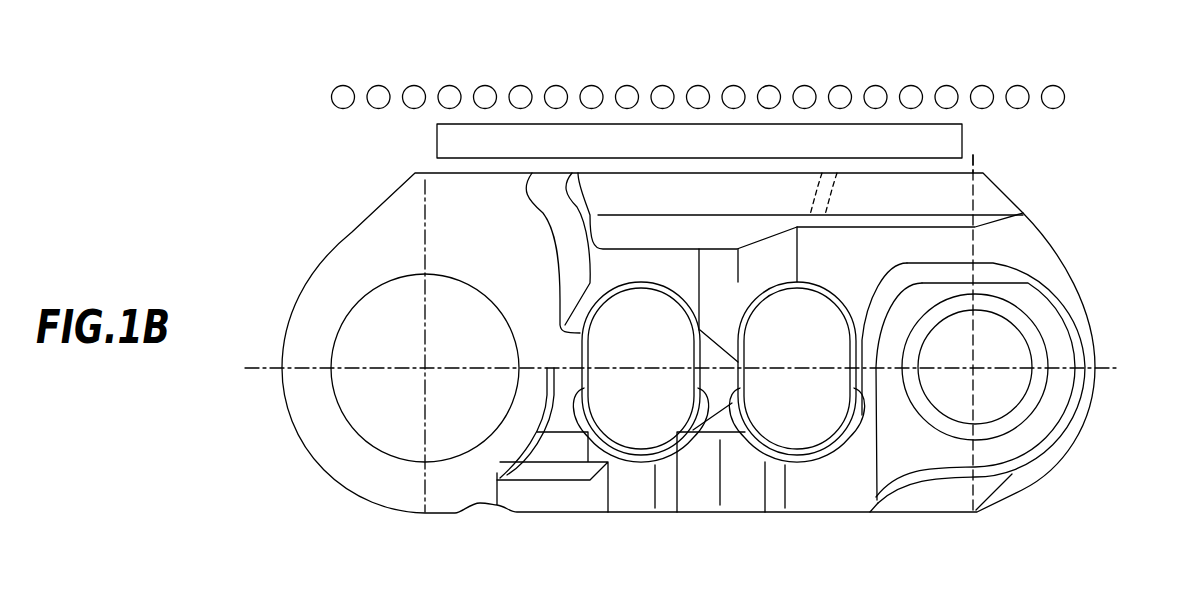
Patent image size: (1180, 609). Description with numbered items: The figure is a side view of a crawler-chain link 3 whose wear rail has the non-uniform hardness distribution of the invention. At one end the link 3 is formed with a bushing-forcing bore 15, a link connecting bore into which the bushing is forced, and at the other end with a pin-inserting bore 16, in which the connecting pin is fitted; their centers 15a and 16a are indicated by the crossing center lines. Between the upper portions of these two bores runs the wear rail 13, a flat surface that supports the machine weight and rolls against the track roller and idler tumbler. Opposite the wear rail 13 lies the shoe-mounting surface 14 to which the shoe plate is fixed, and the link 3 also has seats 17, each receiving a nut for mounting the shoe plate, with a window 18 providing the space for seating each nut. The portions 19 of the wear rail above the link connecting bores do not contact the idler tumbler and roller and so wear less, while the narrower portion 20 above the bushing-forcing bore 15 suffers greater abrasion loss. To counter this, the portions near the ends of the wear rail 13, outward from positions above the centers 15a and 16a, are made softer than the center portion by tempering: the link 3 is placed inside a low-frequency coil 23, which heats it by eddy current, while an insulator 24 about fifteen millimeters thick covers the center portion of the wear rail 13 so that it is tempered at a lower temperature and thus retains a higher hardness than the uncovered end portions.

The link 3 is at (1053, 220).
The wear rail 13 is at (750, 178).
The shoe-mounting surface 14 is at (733, 513).
The bushing-forcing bore 15 is at (340, 322).
The center of the bushing-forcing bore 15a is at (426, 368).
The pin-inserting bore 16 is at (1017, 402).
The center of the pin-inserting bore 16a is at (977, 367).
The seats 17 is at (652, 450).
The window 18 is at (813, 303).
The portions over the link connecting bores 19 is at (428, 158).
The portion positioned closer to the center of the wear rail above the bushing-forci 20 is at (532, 175).
The low-frequency coil 23 is at (1064, 104).
The insulator 24 is at (438, 140).